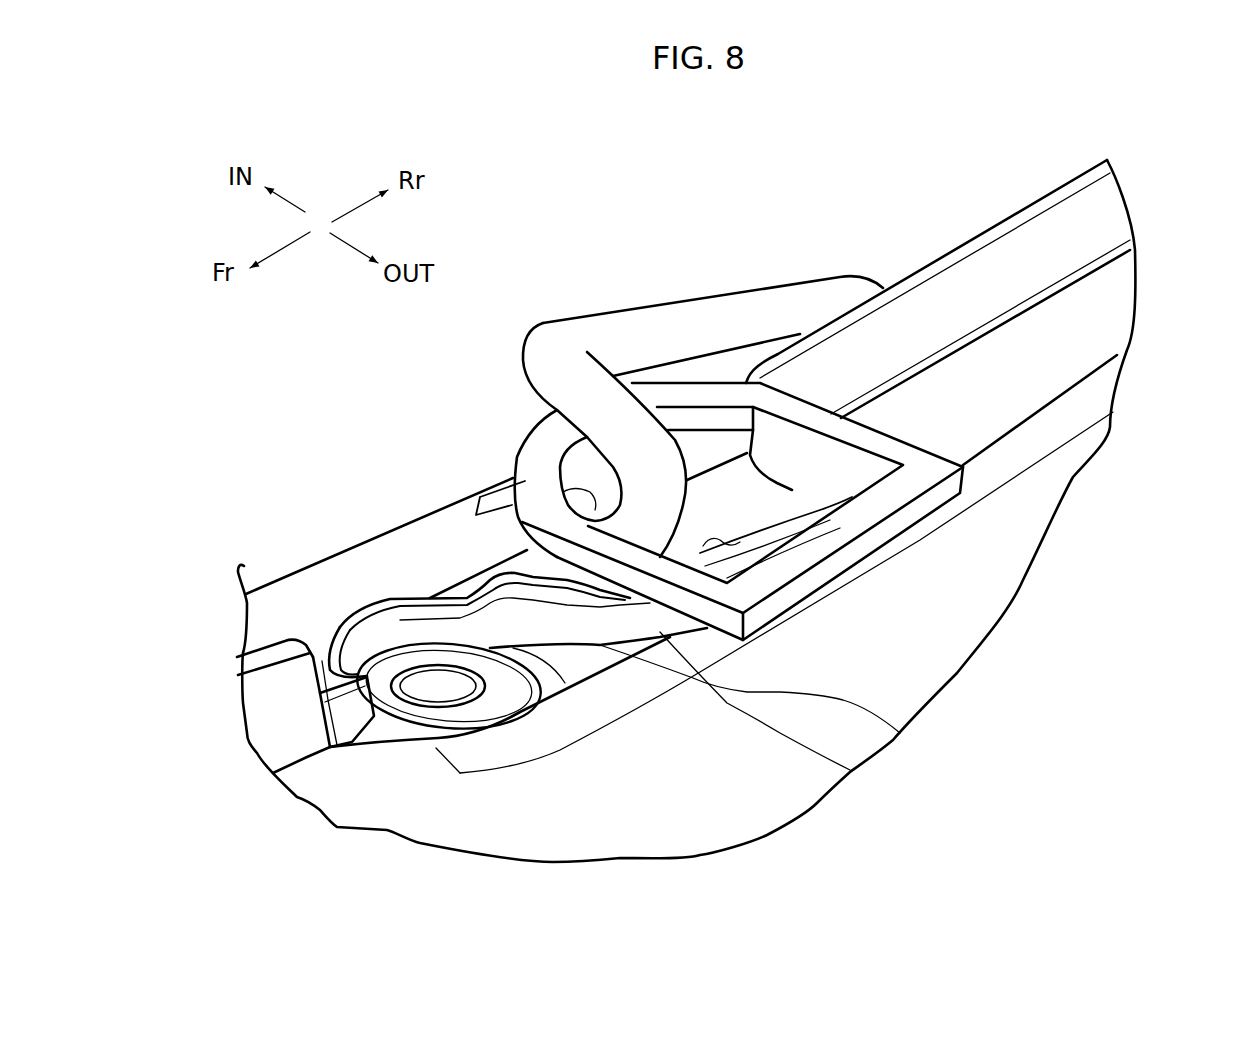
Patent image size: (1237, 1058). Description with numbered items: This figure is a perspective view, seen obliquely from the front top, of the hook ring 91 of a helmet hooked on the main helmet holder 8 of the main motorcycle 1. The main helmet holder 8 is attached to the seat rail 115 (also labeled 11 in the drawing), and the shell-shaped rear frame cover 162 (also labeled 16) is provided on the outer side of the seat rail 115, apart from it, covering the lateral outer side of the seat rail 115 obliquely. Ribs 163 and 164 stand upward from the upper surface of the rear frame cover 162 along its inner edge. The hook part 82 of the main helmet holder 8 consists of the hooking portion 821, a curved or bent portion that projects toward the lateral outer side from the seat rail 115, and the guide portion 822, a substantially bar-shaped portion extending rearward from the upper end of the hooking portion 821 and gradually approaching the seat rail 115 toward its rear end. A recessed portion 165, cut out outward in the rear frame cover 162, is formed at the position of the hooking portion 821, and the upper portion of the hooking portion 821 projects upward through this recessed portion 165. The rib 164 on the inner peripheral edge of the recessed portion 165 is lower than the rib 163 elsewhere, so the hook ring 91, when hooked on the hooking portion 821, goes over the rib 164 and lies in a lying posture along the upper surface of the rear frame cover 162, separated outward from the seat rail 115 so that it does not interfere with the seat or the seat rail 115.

The main motorcycle 1 is at (1058, 793).
The main helmet holder 8 is at (782, 409).
The floor panel 11 is at (380, 550).
The cross member 16 is at (1040, 383).
The hook part 82 is at (699, 364).
The hook ring 91 is at (952, 497).
The seat rail 115 is at (453, 609).
The rear frame cover 162 is at (832, 564).
The rib 163 is at (980, 233).
The rib 164 is at (893, 727).
The recessed portion 165 is at (820, 513).
The hooking portion 821 is at (650, 442).
The guide portion 822 is at (730, 318).